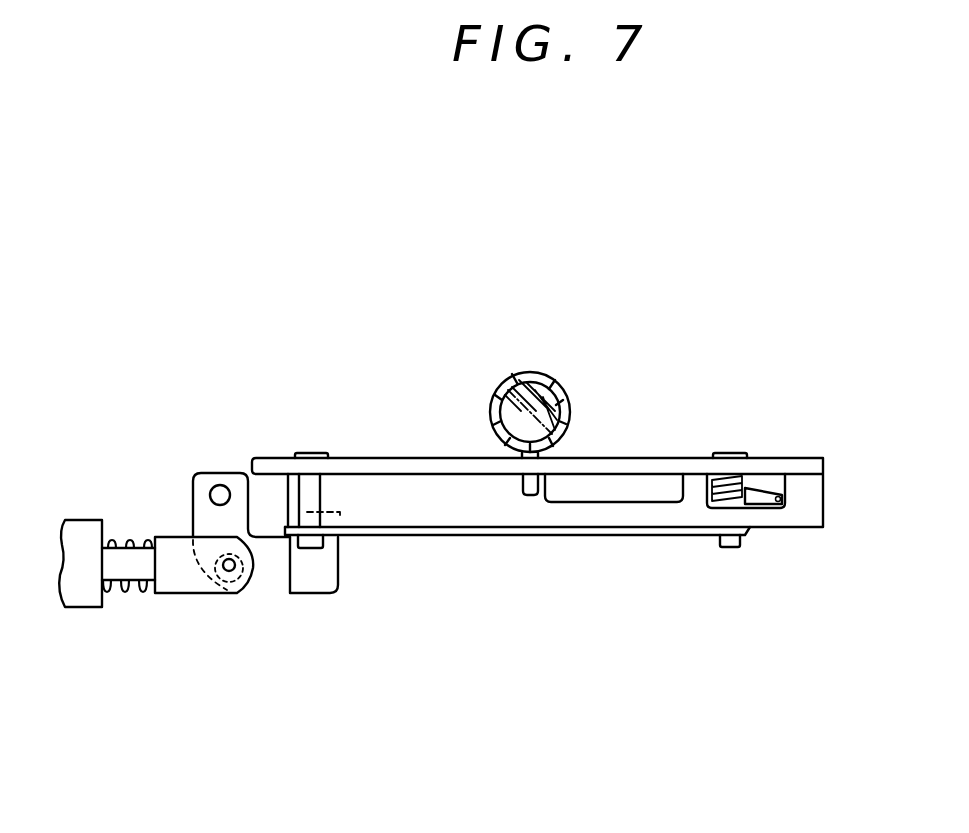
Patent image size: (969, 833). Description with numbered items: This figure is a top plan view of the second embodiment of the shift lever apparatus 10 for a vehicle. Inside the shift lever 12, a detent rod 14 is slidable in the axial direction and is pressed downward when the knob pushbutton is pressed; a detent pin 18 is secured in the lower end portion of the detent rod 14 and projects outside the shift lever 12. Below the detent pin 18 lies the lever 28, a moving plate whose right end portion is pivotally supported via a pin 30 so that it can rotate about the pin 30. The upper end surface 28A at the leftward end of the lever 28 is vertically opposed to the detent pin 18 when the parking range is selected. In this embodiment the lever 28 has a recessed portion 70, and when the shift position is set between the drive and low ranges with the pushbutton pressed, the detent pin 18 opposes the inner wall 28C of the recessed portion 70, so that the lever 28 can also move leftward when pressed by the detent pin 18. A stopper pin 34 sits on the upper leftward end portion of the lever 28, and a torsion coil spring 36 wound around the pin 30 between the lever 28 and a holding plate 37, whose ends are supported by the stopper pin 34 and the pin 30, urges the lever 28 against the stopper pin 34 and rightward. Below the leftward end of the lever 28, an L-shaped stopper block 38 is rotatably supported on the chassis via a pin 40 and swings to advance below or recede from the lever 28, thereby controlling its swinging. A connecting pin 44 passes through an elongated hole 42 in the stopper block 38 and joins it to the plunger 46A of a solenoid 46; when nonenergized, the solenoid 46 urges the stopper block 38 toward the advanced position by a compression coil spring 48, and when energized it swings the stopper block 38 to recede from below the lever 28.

The shift lever apparatus 10 is at (693, 362).
The shift lever 12 is at (556, 374).
The detent rod 14 is at (574, 407).
The detent pin 18 is at (533, 497).
The lever 28 is at (808, 505).
The upper end surface 28A is at (370, 490).
The inner wall 28C is at (547, 490).
The pin 30 is at (728, 452).
The stopper pin 34 is at (305, 452).
The torsion coil spring 36 is at (758, 494).
The holding plate 37 is at (448, 536).
The stopper block 38 is at (320, 580).
The pin 40 is at (218, 487).
The elongated hole 42 is at (229, 575).
The connecting pin 44 is at (235, 566).
The solenoid 46 is at (76, 540).
The plunger 46A is at (183, 583).
The compression coil spring 48 is at (127, 602).
The recessed portion 70 is at (627, 500).